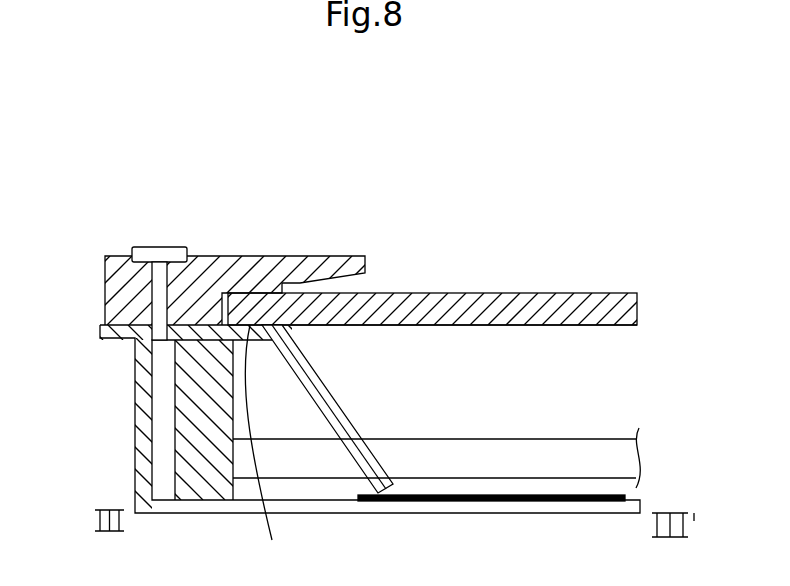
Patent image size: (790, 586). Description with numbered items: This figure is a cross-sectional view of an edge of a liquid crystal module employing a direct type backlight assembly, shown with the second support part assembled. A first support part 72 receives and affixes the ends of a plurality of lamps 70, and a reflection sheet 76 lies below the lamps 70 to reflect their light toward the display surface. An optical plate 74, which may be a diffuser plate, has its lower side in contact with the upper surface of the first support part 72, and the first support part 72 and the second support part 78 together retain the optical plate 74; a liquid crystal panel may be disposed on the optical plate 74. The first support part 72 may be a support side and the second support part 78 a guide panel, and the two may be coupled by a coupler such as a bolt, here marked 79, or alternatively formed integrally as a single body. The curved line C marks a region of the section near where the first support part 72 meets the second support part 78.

The lamps 70 is at (627, 458).
The first support part 72 is at (337, 406).
The optical plate 74 is at (587, 323).
The reflection sheet 76 is at (578, 495).
The second support part 78 is at (105, 290).
The screw 79 is at (164, 247).
The center line C is at (261, 448).